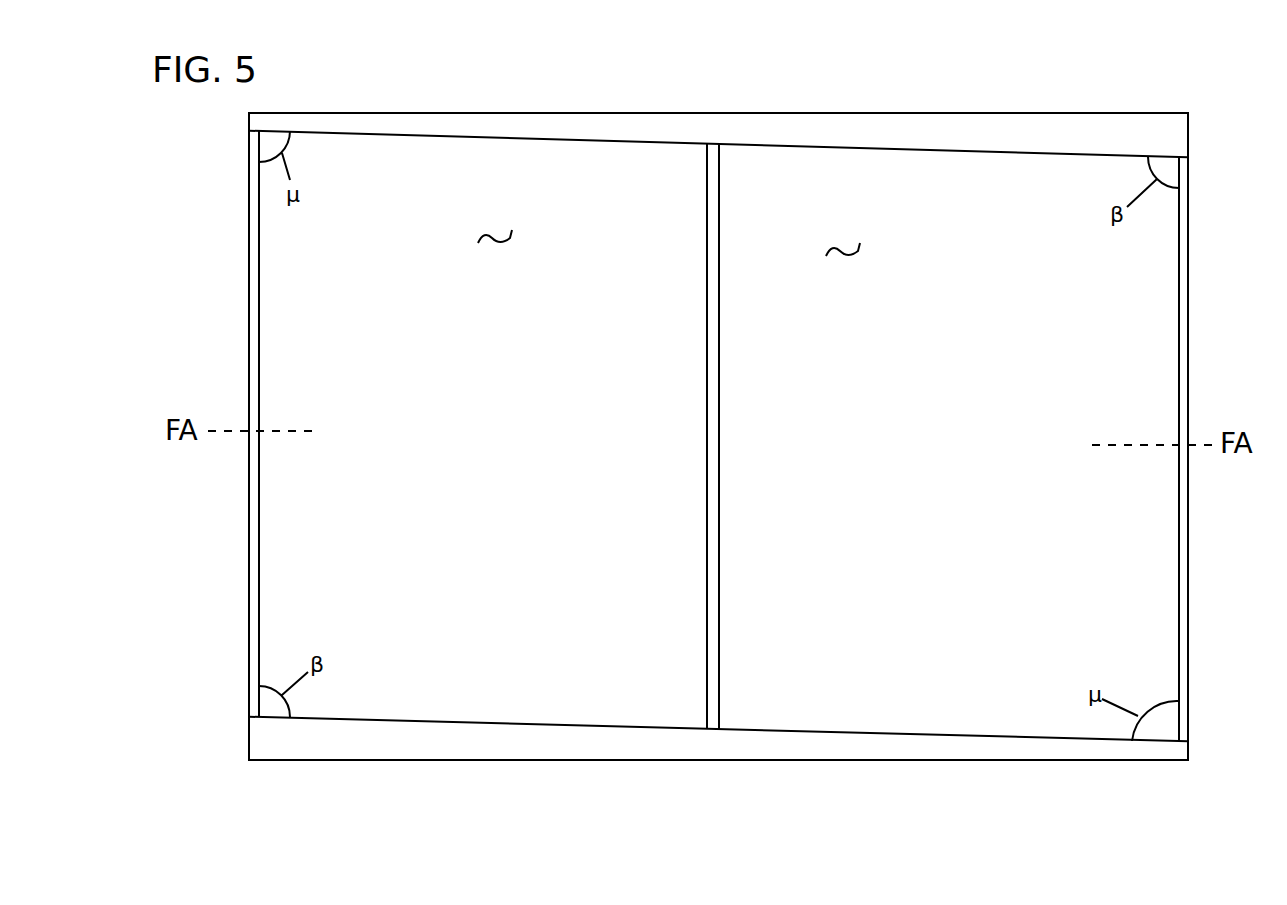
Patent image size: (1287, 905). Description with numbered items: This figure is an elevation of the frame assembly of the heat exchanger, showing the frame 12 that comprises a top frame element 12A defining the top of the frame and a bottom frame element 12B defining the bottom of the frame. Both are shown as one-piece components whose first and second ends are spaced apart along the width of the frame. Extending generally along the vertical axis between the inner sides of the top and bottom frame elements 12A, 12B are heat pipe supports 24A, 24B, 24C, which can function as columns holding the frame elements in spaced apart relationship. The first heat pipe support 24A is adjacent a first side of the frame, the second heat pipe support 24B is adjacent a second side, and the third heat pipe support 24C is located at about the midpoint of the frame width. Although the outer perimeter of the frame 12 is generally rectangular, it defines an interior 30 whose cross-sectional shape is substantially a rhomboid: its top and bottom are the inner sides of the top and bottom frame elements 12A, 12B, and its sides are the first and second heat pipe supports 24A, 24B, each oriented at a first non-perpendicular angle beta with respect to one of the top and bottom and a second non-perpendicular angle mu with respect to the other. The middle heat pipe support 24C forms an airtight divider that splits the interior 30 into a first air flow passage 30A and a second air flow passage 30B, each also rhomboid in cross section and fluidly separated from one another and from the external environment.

The frame 12 is at (350, 786).
The top frame element 12A is at (1005, 113).
The bottom frame element 12B is at (481, 762).
The first heat pipe support 24A is at (257, 354).
The second heat pipe support 24B is at (1180, 492).
The third heat pipe support 24C is at (712, 675).
The interior 30 is at (380, 718).
The first air flow passage 30A is at (495, 234).
The second air flow passage 30B is at (843, 247).